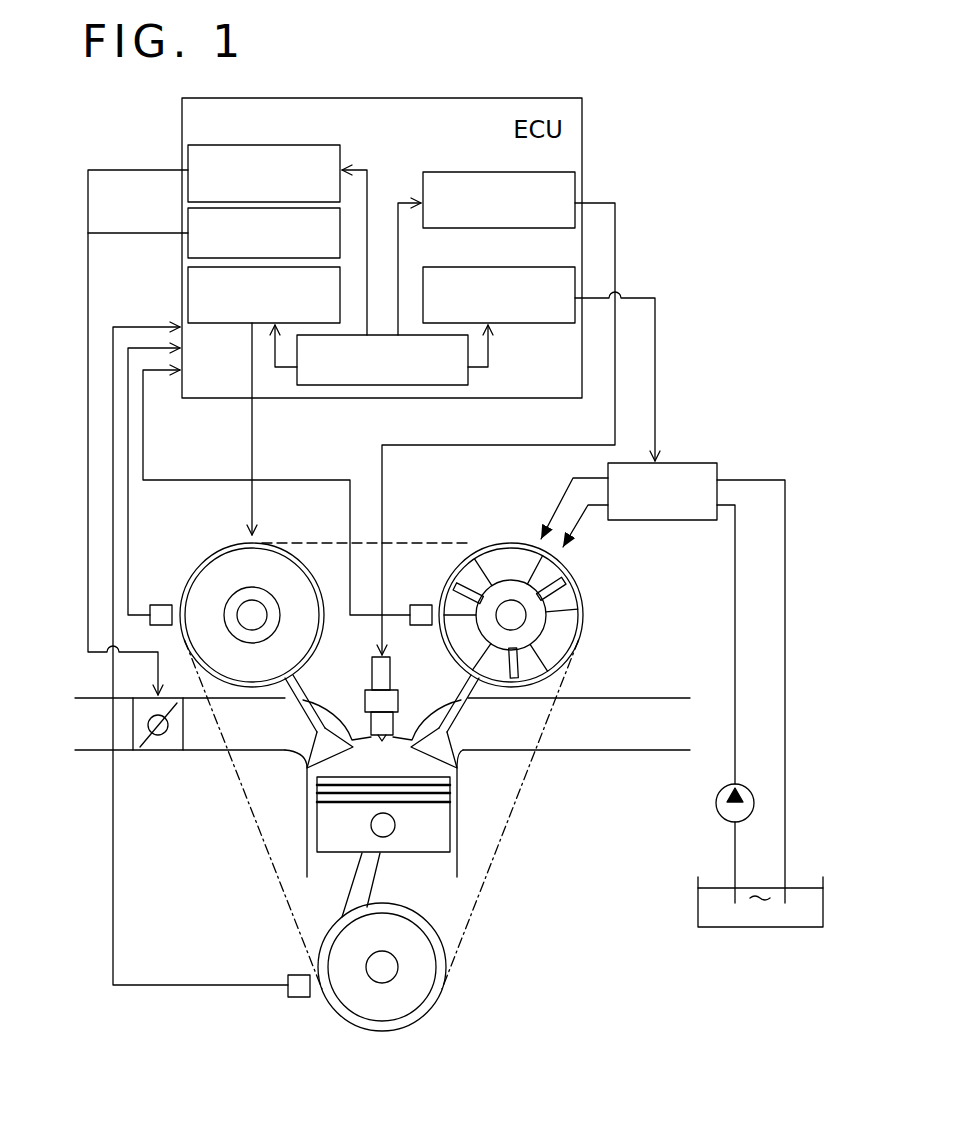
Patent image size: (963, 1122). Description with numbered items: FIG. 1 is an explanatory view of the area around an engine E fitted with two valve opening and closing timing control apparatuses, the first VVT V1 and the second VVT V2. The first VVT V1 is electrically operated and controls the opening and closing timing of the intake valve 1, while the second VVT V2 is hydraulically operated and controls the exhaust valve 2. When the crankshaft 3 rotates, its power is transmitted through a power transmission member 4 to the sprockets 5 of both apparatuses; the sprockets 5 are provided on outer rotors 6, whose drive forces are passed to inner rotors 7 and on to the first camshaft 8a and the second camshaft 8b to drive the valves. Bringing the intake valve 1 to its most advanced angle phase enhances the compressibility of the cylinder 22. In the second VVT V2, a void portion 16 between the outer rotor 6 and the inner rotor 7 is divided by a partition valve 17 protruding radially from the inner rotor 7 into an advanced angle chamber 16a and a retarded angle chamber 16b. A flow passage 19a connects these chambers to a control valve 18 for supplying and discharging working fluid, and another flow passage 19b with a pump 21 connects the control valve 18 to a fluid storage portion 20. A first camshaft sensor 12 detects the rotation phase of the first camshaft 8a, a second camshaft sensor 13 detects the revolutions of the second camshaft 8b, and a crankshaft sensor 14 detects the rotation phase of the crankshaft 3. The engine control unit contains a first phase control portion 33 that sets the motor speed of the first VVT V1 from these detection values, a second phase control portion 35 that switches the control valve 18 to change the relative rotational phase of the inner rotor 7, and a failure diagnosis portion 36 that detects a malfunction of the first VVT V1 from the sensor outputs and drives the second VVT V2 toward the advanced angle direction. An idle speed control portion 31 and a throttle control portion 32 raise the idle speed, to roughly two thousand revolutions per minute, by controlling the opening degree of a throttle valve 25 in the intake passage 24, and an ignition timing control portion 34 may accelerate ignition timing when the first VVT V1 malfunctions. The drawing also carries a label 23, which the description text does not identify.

The intake valve 1 is at (307, 722).
The exhaust valve 2 is at (462, 727).
The crankshaft 3 is at (422, 1015).
The power transmission member 4 is at (515, 807).
The sprocket 5 is at (227, 548).
The outer rotor 6 is at (287, 587).
The inner rotor 7 is at (275, 622).
The first camshaft 8a is at (252, 618).
The second camshaft 8b is at (513, 628).
The first camshaft sensor 12 is at (160, 606).
The second camshaft sensor 13 is at (420, 626).
The crankshaft sensor 14 is at (295, 999).
The void portion 16 is at (490, 497).
The advanced angle chamber 16a is at (457, 603).
The retarded angle chamber 16b is at (475, 577).
The partition valve 17 is at (562, 597).
The control valve 18 is at (682, 462).
The flow passage 19a is at (590, 507).
The flow passage 19b is at (737, 630).
The fluid storage portion 20 is at (765, 930).
The pump 21 is at (745, 783).
The cylinder 22 is at (460, 828).
The timing chain 23 is at (438, 895).
The intake passage 24 is at (108, 750).
The throttle valve 25 is at (163, 735).
The idle speed control portion 31 is at (187, 156).
The throttle control portion 32 is at (187, 222).
The first phase control portion 33 is at (187, 298).
The ignition timing control portion 34 is at (507, 228).
The second phase control portion 35 is at (512, 323).
The failure diagnosis portion 36 is at (435, 385).
The first VVT V1 is at (206, 556).
The second VVT V2 is at (525, 569).
The engine E is at (726, 266).